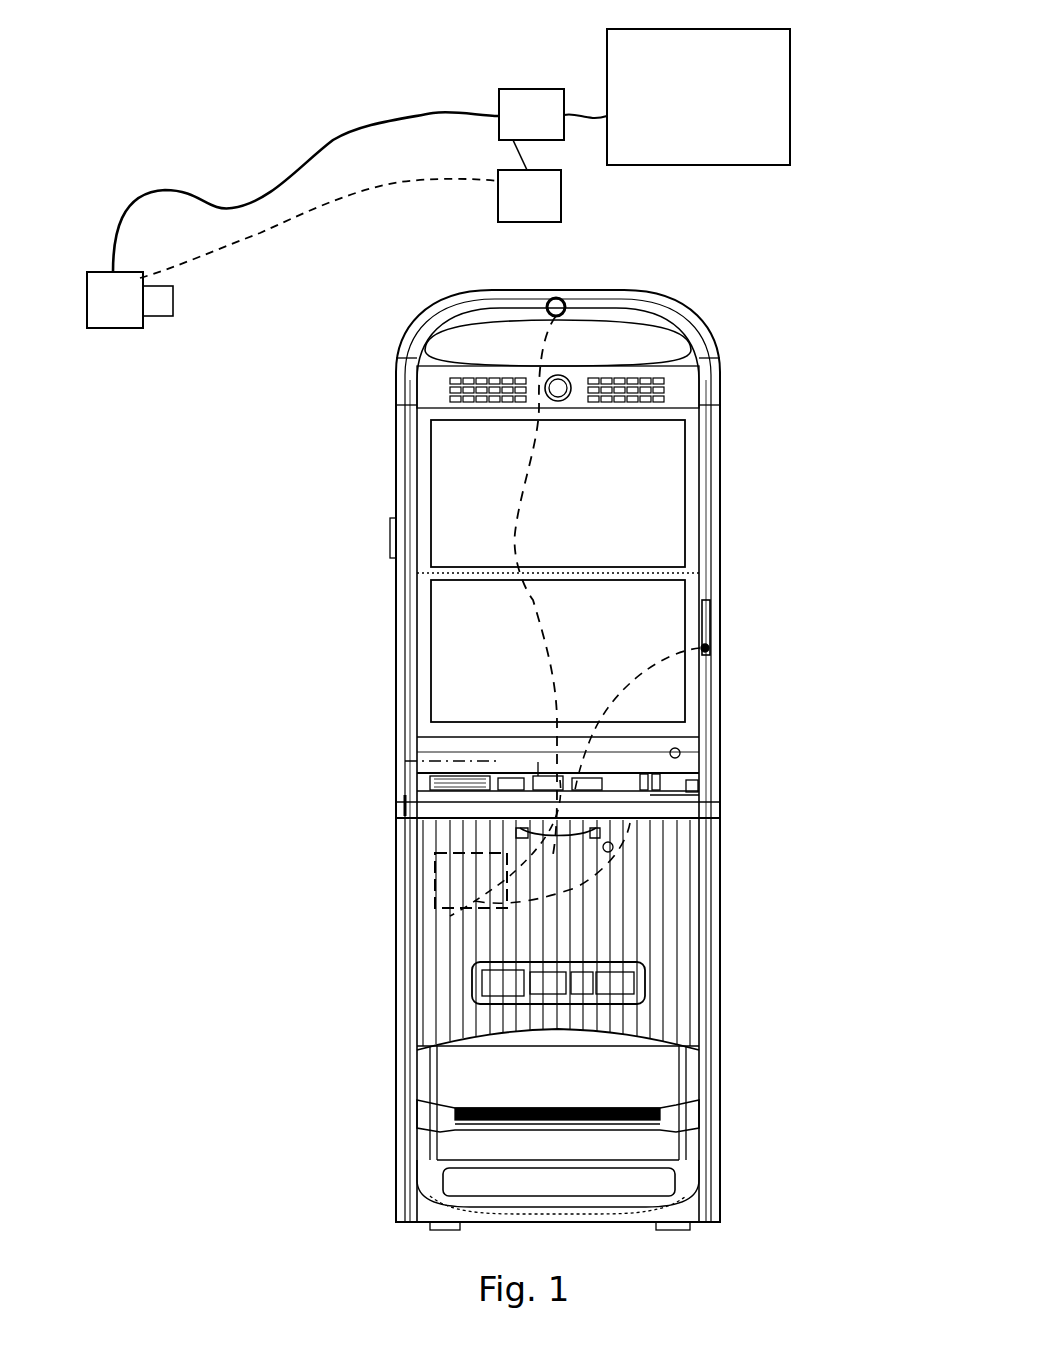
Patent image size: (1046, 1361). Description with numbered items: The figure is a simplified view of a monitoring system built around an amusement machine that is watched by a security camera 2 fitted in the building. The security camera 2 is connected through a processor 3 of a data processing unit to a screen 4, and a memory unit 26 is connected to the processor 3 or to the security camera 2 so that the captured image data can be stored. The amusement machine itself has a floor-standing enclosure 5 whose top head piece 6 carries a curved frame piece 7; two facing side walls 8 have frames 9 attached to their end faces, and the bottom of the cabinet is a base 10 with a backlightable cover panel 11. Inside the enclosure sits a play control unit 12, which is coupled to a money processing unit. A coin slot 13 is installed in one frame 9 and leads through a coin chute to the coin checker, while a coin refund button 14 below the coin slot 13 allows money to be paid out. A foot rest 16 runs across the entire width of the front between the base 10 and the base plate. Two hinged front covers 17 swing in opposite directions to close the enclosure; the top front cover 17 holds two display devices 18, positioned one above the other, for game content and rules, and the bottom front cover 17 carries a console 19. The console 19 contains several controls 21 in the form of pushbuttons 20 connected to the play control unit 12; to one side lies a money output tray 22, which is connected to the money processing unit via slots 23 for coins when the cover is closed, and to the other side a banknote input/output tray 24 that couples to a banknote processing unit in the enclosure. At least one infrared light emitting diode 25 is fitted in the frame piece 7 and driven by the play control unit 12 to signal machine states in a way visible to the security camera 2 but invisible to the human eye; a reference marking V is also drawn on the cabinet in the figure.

The security camera 2 is at (130, 300).
The processor 3 is at (531, 114).
The screen 4 is at (698, 97).
The floor-standing enclosure 5 is at (601, 741).
The top head piece 6 is at (737, 293).
The frame piece 7 is at (428, 335).
The side wall 8 is at (393, 418).
The frame 9 is at (404, 450).
The base 10 is at (416, 1206).
The backlightable cover panel 11 is at (650, 1181).
The play control unit 12 is at (433, 880).
The coin slot 13 is at (709, 623).
The coin refund button 14 is at (712, 649).
The foot rest 16 is at (442, 1113).
The front cover 17 is at (702, 841).
The display device 18 is at (558, 571).
The console 19 is at (403, 800).
The pushbutton 20 is at (503, 778).
The control 21 is at (543, 777).
The money output tray 22 is at (690, 796).
The slot for coins 23 is at (640, 779).
The banknote input/output tray 24 is at (428, 782).
The infrared light emitting diode 25 is at (548, 304).
The memory unit 26 is at (529, 196).
The vertical reference V is at (408, 818).